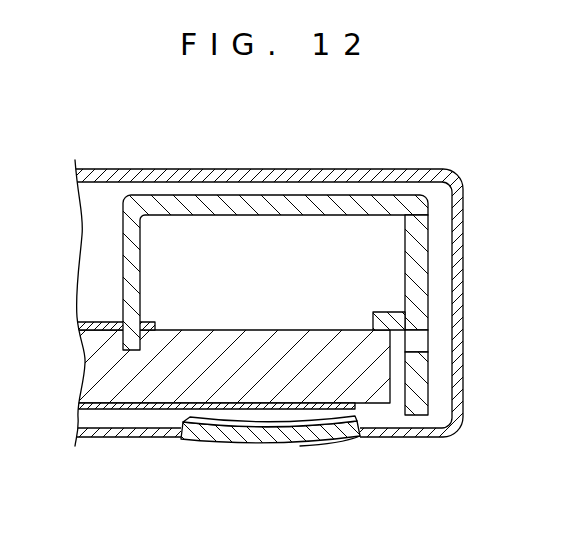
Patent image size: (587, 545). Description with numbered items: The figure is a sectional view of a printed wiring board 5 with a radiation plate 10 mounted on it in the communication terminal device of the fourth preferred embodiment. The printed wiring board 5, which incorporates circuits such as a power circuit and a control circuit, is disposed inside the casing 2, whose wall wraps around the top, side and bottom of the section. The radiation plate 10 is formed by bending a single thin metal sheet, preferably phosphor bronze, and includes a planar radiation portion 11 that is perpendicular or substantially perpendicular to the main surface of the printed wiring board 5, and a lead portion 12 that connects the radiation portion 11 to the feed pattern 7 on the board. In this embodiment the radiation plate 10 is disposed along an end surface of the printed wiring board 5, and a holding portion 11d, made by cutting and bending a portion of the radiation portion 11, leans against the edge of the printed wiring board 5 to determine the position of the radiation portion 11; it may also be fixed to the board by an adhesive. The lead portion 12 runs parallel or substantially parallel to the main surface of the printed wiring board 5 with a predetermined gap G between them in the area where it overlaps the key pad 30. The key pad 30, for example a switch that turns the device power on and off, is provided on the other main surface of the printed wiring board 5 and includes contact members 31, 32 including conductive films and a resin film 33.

The casing 2 is at (407, 169).
The printed wiring board 5 is at (318, 328).
The feed pattern 7 is at (98, 322).
The radiation plate 10 is at (439, 248).
The radiation portion 11 is at (428, 280).
The holding portion 11d is at (382, 312).
The lead portion 12 is at (187, 215).
The gap G is at (249, 215).
The key pad 30 is at (266, 465).
The contact member 31 is at (248, 423).
The contact member 32 is at (293, 411).
The resin film 33 is at (340, 443).